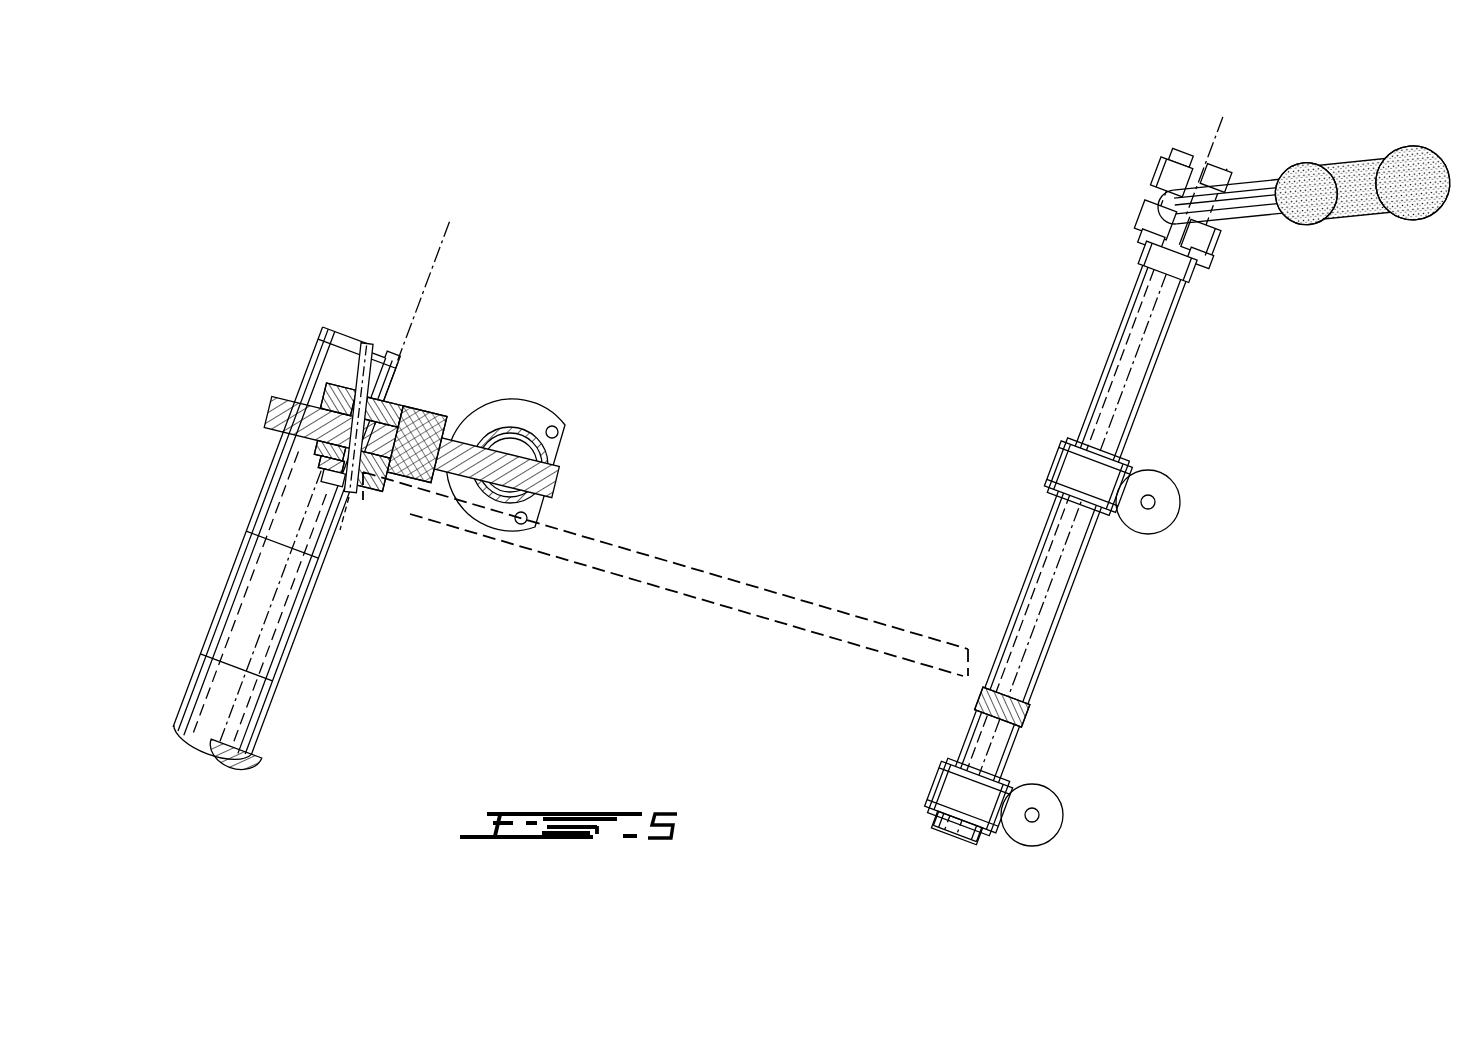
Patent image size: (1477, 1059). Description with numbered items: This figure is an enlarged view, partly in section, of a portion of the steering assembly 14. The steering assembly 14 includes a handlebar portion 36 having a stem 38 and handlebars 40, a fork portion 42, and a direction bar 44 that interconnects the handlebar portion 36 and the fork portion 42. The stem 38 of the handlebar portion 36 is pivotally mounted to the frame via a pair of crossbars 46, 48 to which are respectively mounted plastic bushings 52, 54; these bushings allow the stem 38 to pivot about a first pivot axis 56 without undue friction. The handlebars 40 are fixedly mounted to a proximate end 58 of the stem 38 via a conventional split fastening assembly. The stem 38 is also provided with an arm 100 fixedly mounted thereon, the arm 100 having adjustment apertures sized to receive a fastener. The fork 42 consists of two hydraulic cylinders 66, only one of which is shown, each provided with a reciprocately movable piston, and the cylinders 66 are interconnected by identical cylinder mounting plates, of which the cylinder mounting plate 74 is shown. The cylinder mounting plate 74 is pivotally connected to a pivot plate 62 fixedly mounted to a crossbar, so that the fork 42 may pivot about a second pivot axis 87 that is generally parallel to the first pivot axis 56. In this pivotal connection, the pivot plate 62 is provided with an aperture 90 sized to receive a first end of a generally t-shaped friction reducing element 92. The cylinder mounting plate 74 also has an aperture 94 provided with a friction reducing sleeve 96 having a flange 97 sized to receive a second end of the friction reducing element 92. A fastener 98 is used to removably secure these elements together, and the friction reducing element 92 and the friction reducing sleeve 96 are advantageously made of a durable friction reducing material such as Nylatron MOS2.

The steering assembly 14 is at (312, 255).
The handlebar portion 36 is at (1058, 316).
The stem 38 is at (1140, 360).
The handlebars 40 is at (1243, 205).
The fork portion 42 is at (225, 498).
The direction bar 44 is at (751, 597).
The crossbar 46 is at (1168, 503).
The crossbar 48 is at (1045, 815).
The plastic bushing 52 is at (1060, 466).
The plastic bushing 54 is at (945, 785).
The first pivot axis 56 is at (1222, 128).
The proximate end of the stem 58 is at (533, 413).
The pivot plate 62 is at (443, 430).
The hydraulic cylinder 66 is at (248, 600).
The cylinder mounting plate 74 is at (266, 410).
The second pivot axis 87 is at (445, 238).
The aperture 90 is at (400, 398).
The friction reducing element 92 is at (367, 383).
The aperture 94 is at (345, 392).
The friction reducing sleeve 96 is at (413, 488).
The flange 97 is at (338, 524).
The fastener 98 is at (380, 380).
The arm 100 is at (1010, 715).